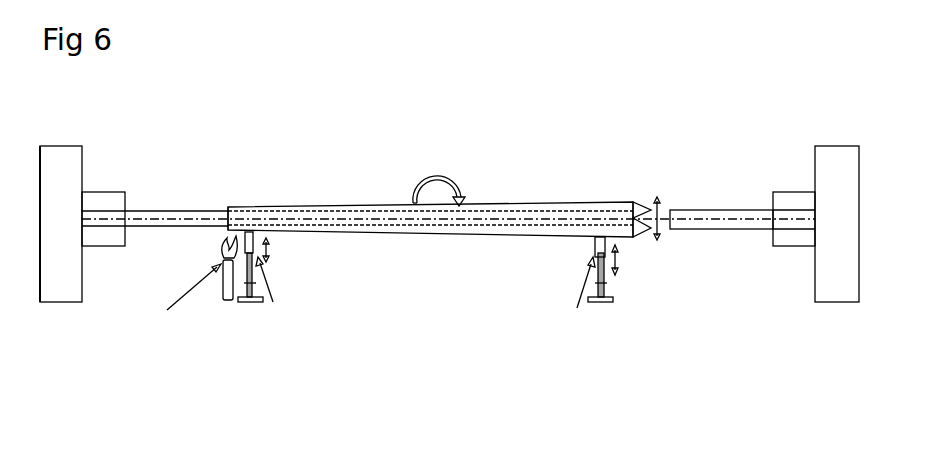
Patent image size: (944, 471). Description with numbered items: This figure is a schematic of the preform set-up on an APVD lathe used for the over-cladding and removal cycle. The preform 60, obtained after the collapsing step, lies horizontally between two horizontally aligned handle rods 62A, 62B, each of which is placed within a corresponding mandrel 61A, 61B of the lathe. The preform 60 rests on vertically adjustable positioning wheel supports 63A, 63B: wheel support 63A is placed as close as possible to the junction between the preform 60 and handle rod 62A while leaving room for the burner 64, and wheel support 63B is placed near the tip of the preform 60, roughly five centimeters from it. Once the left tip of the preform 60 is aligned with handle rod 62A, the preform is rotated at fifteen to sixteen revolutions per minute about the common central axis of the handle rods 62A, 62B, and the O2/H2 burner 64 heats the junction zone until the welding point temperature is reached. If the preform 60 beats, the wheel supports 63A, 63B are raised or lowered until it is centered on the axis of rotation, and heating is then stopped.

The preform 60 is at (473, 233).
The mandrel 61A is at (105, 193).
The mandrel 61B is at (793, 190).
The handle rod 62A is at (220, 208).
The handle rod 62B is at (675, 208).
The positioning wheel support 63A is at (245, 302).
The positioning wheel support 63B is at (597, 302).
The O2/H2 burner 64 is at (225, 300).